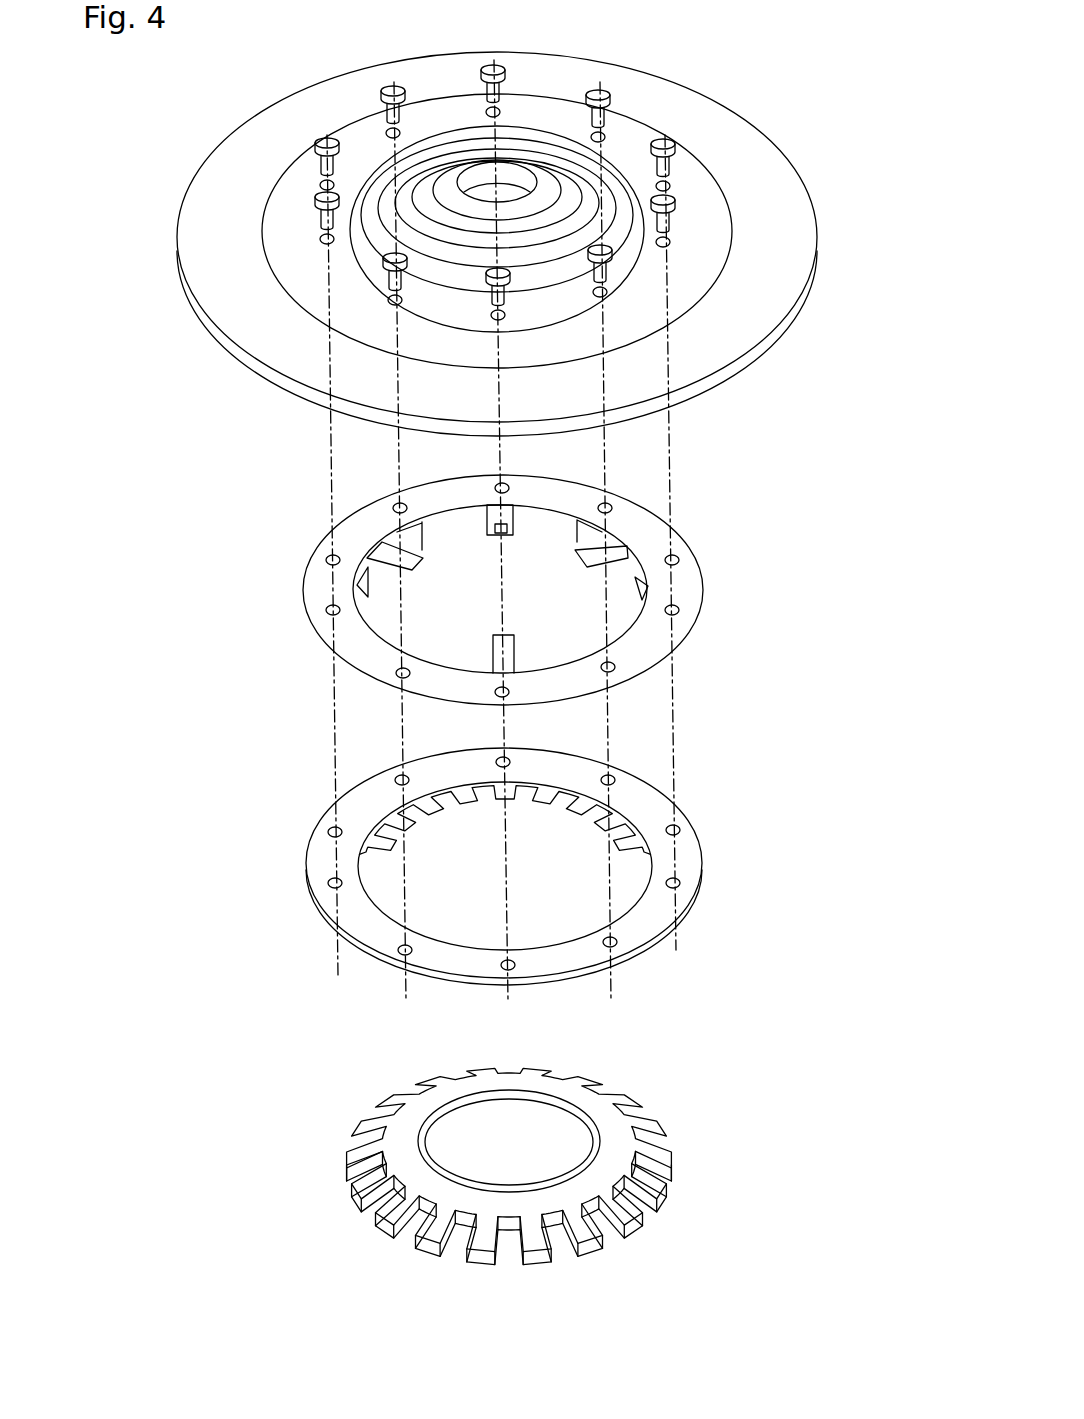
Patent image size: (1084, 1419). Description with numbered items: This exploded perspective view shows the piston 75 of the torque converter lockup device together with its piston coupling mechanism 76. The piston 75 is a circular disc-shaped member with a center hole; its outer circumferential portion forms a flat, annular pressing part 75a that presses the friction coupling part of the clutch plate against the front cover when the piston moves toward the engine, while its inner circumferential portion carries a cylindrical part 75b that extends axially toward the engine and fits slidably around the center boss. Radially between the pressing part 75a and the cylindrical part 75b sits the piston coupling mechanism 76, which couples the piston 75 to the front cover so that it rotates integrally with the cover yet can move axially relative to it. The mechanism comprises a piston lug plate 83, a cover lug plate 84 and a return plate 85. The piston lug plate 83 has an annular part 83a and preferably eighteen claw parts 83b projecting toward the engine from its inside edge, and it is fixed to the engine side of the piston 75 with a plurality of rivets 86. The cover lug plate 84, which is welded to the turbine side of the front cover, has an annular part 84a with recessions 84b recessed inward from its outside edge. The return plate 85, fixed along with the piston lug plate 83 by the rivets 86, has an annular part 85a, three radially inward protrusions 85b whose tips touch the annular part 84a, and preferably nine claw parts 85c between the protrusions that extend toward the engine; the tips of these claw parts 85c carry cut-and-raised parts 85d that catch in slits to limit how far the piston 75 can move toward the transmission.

The piston 75 is at (461, 222).
The pressing part 75a is at (178, 290).
The cylindrical part 75b is at (480, 168).
The piston coupling mechanism 76 is at (140, 697).
The piston lug plate 83 is at (462, 866).
The annular part 83a is at (648, 800).
The claw parts 83b is at (559, 800).
The cover lug plate 84 is at (448, 1049).
The annular part 84a is at (614, 1132).
The recessions 84b is at (382, 1085).
The return plate 85 is at (474, 575).
The annular part 85a is at (648, 523).
The protrusions 85b is at (582, 553).
The claw parts 85c is at (502, 566).
The cut-and-raised parts 85d is at (510, 526).
The rivets 86 is at (603, 90).